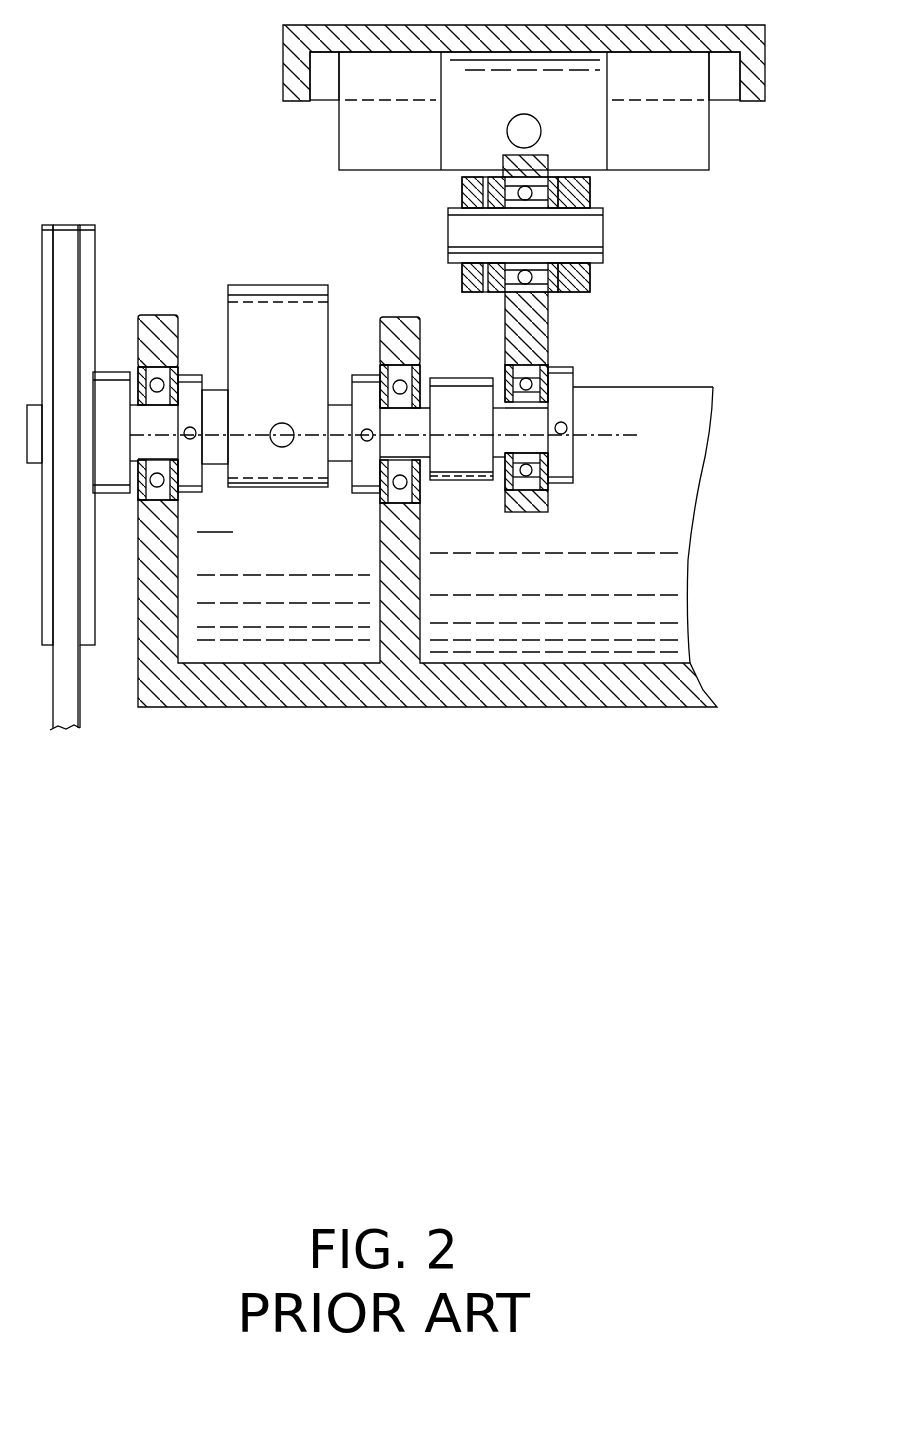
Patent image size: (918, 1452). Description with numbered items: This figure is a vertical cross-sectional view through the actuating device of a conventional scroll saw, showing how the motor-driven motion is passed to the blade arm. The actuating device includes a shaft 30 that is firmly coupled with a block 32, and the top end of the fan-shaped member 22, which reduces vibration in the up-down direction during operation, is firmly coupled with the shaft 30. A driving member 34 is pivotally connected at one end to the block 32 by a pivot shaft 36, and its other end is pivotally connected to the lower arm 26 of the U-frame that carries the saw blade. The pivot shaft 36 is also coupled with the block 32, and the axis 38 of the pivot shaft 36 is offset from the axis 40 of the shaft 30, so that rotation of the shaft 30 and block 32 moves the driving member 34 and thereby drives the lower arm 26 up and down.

The fan-shaped member 22 is at (297, 312).
The lower arm 26 is at (587, 277).
The shaft 30 is at (345, 437).
The block 32 is at (458, 450).
The driving member 34 is at (547, 343).
The pivot shaft 36 is at (512, 428).
The axis of the pivot shaft 38 is at (583, 443).
The axis of the shaft 40 is at (608, 433).